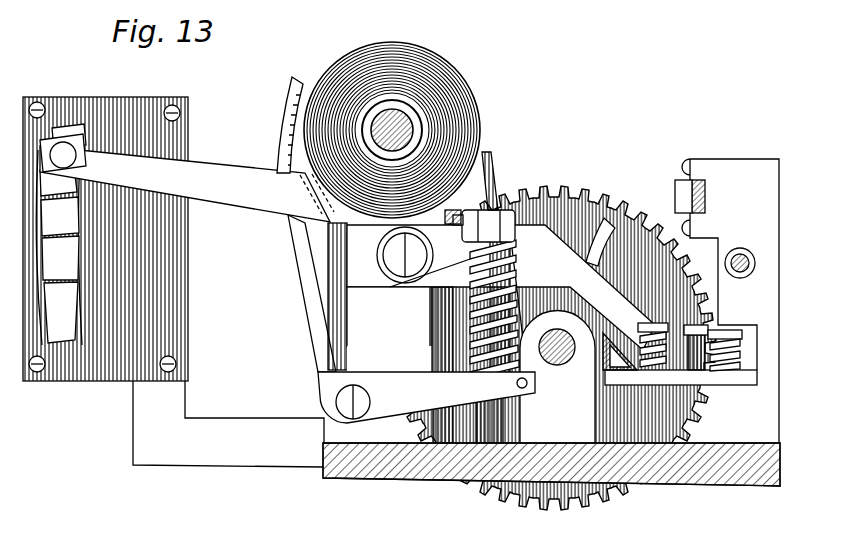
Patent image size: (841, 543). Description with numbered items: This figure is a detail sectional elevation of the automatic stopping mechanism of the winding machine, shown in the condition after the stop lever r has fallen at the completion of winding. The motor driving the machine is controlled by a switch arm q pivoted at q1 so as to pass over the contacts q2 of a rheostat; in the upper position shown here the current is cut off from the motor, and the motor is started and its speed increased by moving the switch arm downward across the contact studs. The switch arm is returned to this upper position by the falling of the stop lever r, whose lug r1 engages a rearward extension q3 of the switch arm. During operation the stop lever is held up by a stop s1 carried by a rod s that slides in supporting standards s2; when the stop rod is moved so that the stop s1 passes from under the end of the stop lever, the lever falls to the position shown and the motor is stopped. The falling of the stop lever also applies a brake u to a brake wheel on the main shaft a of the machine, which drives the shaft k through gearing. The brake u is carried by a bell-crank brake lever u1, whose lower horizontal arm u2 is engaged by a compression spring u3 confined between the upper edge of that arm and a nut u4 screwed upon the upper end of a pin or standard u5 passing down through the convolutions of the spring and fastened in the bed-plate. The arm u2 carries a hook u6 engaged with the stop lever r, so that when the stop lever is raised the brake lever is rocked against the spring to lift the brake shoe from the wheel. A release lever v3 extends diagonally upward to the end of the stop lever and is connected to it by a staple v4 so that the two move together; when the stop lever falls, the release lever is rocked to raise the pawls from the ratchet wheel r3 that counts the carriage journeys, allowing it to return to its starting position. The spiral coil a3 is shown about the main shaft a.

The main shaft a is at (412, 130).
The spiral spring coil a3 is at (405, 40).
The shaft k is at (593, 12).
The switch arm q is at (232, 195).
The pivot q1 is at (402, 270).
The contacts q2 is at (62, 212).
The rearward extension q3 is at (505, 262).
The stop lever r is at (501, 299).
The lug r1 is at (533, 212).
The ratchet wheel r3 is at (567, 511).
The rod s is at (705, 196).
The stop s1 is at (678, 191).
The supporting standards s2 is at (734, 301).
The brake u is at (284, 112).
The bell-crank brake lever u1 is at (302, 262).
The lower horizontal arm u2 is at (426, 397).
The compression spring u3 is at (516, 313).
The nut u4 is at (468, 232).
The pin or standard u5 is at (492, 418).
The hook u6 is at (495, 166).
The release lever v3 is at (650, 370).
The staple v4 is at (634, 370).